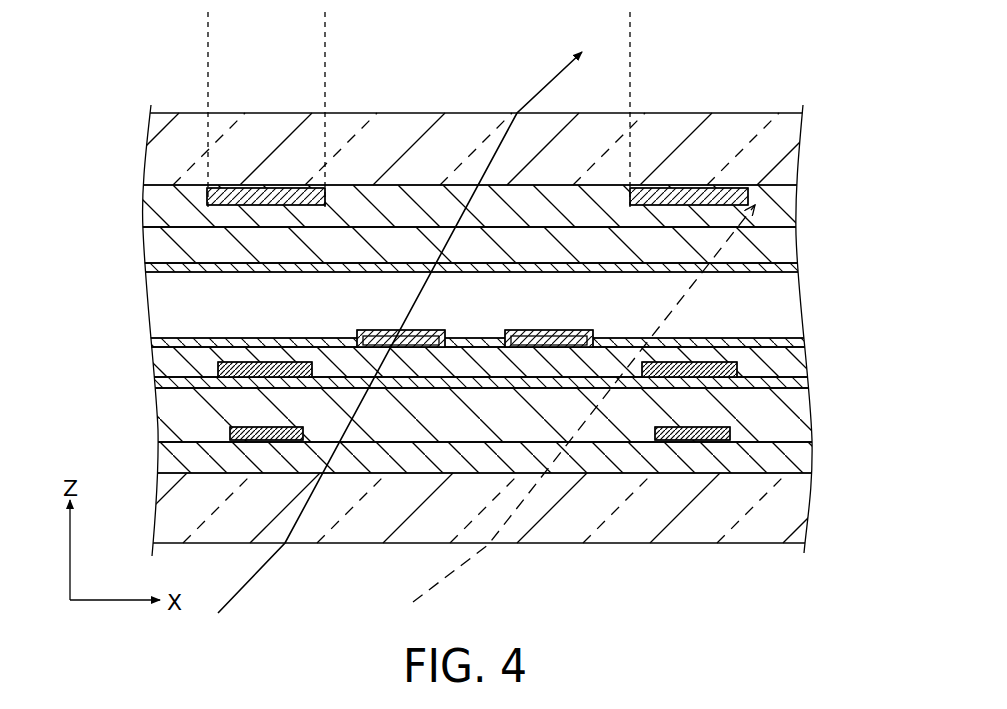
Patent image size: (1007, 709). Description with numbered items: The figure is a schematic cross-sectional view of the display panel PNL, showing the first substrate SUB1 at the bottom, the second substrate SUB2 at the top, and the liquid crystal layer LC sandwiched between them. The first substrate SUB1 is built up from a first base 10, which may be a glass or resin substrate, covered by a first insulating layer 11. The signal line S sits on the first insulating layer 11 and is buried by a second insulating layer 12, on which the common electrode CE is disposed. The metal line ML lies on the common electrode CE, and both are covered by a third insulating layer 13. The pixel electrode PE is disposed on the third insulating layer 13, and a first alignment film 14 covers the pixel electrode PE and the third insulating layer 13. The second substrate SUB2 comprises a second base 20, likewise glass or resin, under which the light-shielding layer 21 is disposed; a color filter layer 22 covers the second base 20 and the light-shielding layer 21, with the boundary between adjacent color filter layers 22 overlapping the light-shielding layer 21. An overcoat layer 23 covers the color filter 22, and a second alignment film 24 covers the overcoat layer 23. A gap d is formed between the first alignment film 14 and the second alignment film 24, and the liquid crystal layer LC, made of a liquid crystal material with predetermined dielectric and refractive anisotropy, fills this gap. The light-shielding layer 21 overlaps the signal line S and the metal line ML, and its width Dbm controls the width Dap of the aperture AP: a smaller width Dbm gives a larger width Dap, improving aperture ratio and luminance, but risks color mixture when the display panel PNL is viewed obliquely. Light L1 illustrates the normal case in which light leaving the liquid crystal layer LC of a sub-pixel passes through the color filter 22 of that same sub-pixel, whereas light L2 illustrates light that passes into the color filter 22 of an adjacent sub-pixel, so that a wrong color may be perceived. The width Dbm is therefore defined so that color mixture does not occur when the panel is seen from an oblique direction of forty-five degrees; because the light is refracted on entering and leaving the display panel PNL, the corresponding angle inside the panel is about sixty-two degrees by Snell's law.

The first base 10 is at (797, 508).
The first insulating layer 11 is at (790, 458).
The second insulating layer 12 is at (797, 418).
The third insulating layer 13 is at (797, 363).
The first alignment film 14 is at (797, 340).
The second base 20 is at (799, 151).
The light-shielding layer 21 is at (297, 187).
The color filter layer 22 is at (786, 208).
The overcoat layer 23 is at (800, 250).
The second alignment film 24 is at (797, 273).
The display panel PNL is at (178, 99).
The first substrate SUB1 is at (126, 408).
The second substrate SUB2 is at (126, 231).
The liquid crystal layer LC is at (170, 305).
The metal line ML is at (285, 361).
The common electrode CE is at (338, 378).
The pixel electrode PE is at (378, 331).
The signal line S is at (238, 441).
The light L1 is at (258, 580).
The light L2 is at (440, 583).
The aperture AP is at (434, 153).
The width of the light-shielding layer Dbm is at (325, 35).
The width of the aperture Dap is at (630, 35).
The gap d is at (208, 273).